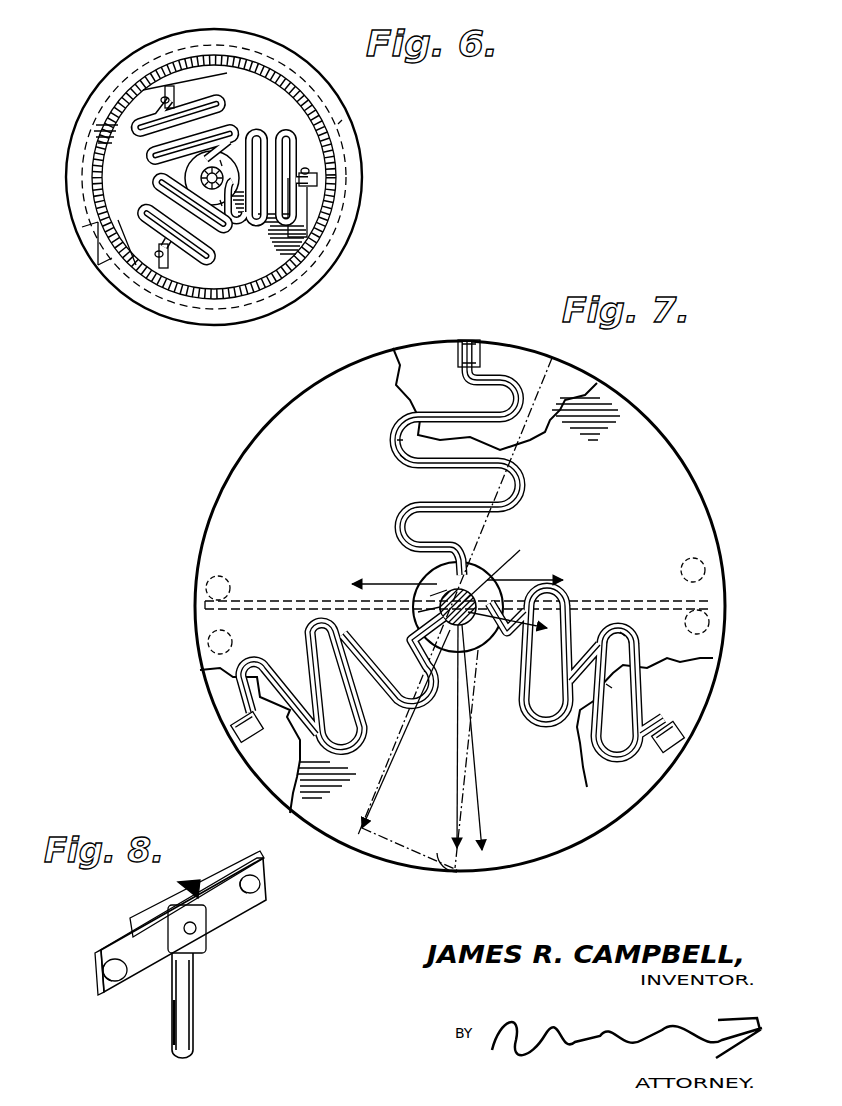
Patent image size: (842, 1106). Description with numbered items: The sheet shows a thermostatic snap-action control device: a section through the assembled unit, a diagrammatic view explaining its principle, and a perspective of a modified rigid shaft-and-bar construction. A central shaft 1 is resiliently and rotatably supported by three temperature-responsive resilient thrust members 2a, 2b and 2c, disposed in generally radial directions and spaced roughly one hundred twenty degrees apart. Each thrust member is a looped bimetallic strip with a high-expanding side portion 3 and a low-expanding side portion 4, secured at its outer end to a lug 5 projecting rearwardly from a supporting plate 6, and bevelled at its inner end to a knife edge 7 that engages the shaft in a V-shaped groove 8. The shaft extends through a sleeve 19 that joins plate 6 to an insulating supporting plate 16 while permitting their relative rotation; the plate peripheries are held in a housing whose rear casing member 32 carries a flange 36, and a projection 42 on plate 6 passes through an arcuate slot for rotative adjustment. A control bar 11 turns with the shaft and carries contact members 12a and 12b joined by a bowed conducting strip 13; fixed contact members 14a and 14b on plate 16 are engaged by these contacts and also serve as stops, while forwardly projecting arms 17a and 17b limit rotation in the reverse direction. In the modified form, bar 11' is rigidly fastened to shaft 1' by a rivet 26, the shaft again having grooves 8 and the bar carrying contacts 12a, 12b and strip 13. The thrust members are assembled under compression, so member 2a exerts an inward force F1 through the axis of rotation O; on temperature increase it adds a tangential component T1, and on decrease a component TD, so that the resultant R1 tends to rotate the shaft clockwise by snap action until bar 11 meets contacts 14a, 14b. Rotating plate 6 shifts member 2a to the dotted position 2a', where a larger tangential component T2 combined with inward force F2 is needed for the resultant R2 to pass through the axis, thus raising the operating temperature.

In FIG. 6, the central shaft 1 is at (231, 225).
In FIG. 7, the central shaft 1 is at (457, 630).
In FIG. 8, the shaft 1' is at (198, 944).
In FIG. 6, the temperature-responsive resilient thrust member 2a is at (143, 117).
In FIG. 7, the temperature-responsive resilient thrust member 2a is at (483, 458).
In FIG. 7, the shifted longitudinal axis of thrust member 2a 2a' is at (455, 573).
In FIG. 6, the temperature-responsive resilient thrust member 2b is at (287, 130).
In FIG. 7, the temperature-responsive resilient thrust member 2b is at (541, 724).
In FIG. 6, the temperature-responsive resilient thrust member 2c is at (185, 219).
In FIG. 7, the temperature-responsive resilient thrust member 2c is at (310, 655).
In FIG. 7, the high-expanding side portion 3 is at (397, 446).
In FIG. 7, the low-expanding side portion 4 is at (408, 463).
In FIG. 6, the lug 5 is at (160, 92).
In FIG. 7, the lug 5 is at (466, 340).
In FIG. 6, the supporting plate 6 is at (300, 257).
In FIG. 7, the supporting plate 6 is at (418, 352).
In FIG. 7, the knife edge 7 is at (437, 586).
In FIG. 6, the V-shaped groove 8 is at (222, 164).
In FIG. 7, the V-shaped groove 8 is at (463, 588).
In FIG. 8, the V-shaped groove 8 is at (178, 1020).
In FIG. 7, the bar 11 is at (458, 588).
In FIG. 8, the bar 11' is at (168, 926).
In FIG. 8, the contact member 12a is at (258, 892).
In FIG. 8, the contact member 12b is at (110, 974).
In FIG. 8, the conducting strip 13 is at (193, 882).
In FIG. 7, the fixed contact member 14a is at (206, 584).
In FIG. 7, the fixed contact member 14b is at (709, 621).
In FIG. 7, the supporting plate 16 is at (650, 447).
In FIG. 7, the forwardly projecting arm 17a is at (208, 643).
In FIG. 7, the forwardly projecting arm 17b is at (705, 568).
In FIG. 6, the sleeve 19 is at (187, 173).
In FIG. 8, the rivet 26 is at (196, 927).
In FIG. 6, the rear casing member 32 is at (93, 137).
In FIG. 6, the flange 36 is at (342, 120).
In FIG. 6, the projection 42 is at (87, 257).
In FIG. 7, the axis of rotation of the shaft O is at (418, 612).
In FIG. 7, the tangential component of force on temperature decrease TD is at (386, 584).
In FIG. 7, the tangential component of force on temperature increase T1 is at (545, 564).
In FIG. 7, the tangential component of force in adjusted position T2 is at (510, 628).
In FIG. 7, the inward force F1 is at (455, 816).
In FIG. 7, the inward force in adjusted position F2 is at (398, 748).
In FIG. 7, the resultant force R1 is at (468, 732).
In FIG. 7, the resultant force in adjusted position R2 is at (437, 873).